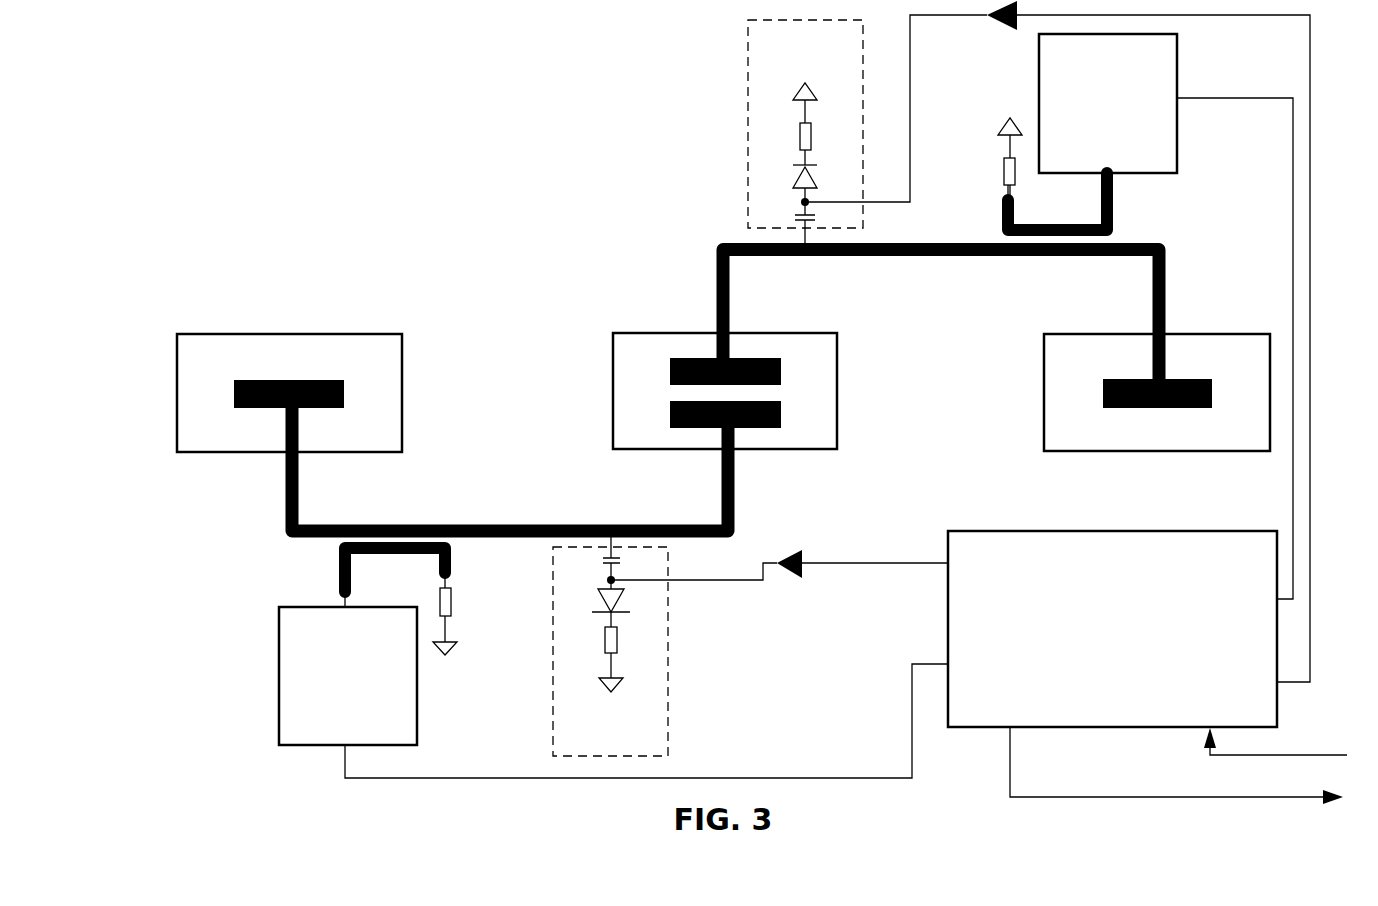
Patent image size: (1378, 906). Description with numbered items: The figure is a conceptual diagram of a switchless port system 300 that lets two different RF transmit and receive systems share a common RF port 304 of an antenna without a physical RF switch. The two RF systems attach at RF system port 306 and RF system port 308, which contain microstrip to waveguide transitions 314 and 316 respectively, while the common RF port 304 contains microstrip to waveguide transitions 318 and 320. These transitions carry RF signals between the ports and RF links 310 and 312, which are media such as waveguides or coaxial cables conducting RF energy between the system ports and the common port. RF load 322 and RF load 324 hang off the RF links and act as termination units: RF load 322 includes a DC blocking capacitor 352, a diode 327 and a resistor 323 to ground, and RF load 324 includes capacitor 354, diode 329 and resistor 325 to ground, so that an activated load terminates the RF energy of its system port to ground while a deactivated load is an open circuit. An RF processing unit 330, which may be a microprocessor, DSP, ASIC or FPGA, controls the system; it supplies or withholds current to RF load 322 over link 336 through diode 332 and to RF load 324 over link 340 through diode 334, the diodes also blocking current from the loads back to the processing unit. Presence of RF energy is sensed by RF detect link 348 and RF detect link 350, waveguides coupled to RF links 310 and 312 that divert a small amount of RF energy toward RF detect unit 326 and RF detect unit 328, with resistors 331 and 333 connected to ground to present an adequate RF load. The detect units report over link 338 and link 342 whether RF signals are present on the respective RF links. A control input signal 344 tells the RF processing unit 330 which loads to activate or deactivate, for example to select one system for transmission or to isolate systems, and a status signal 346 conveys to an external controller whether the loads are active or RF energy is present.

The switchless port system 300 is at (240, 124).
The common RF port 304 is at (837, 410).
The RF system port 306 is at (402, 400).
The RF system port 308 is at (1044, 400).
The RF link 310 is at (472, 537).
The RF link 312 is at (912, 243).
The microstrip to waveguide transition 314 is at (295, 380).
The microstrip to waveguide transition 316 is at (1175, 379).
The microstrip to waveguide transition 318 is at (700, 358).
The microstrip to waveguide transition 320 is at (745, 428).
The RF load 322 is at (610, 651).
The resistor 323 is at (617, 640).
The RF load 324 is at (805, 124).
The resistor 325 is at (800, 133).
The RF detect unit 326 is at (348, 676).
The diode 327 is at (608, 606).
The RF detect unit 328 is at (1108, 103).
The diode 329 is at (798, 188).
The RF processing unit 330 is at (1112, 629).
The resistor 331 is at (452, 610).
The diode 332 is at (797, 556).
The resistor 333 is at (1003, 175).
The diode 334 is at (1015, 28).
The link 336 is at (687, 580).
The link 338 is at (815, 778).
The link 340 is at (910, 120).
The link 342 is at (1207, 98).
The control input signal 344 is at (1283, 755).
The status signal 346 is at (1067, 797).
The RF detect link 348 is at (342, 578).
The RF detect link 350 is at (1113, 215).
The capacitor 352 is at (618, 560).
The capacitor 354 is at (812, 215).